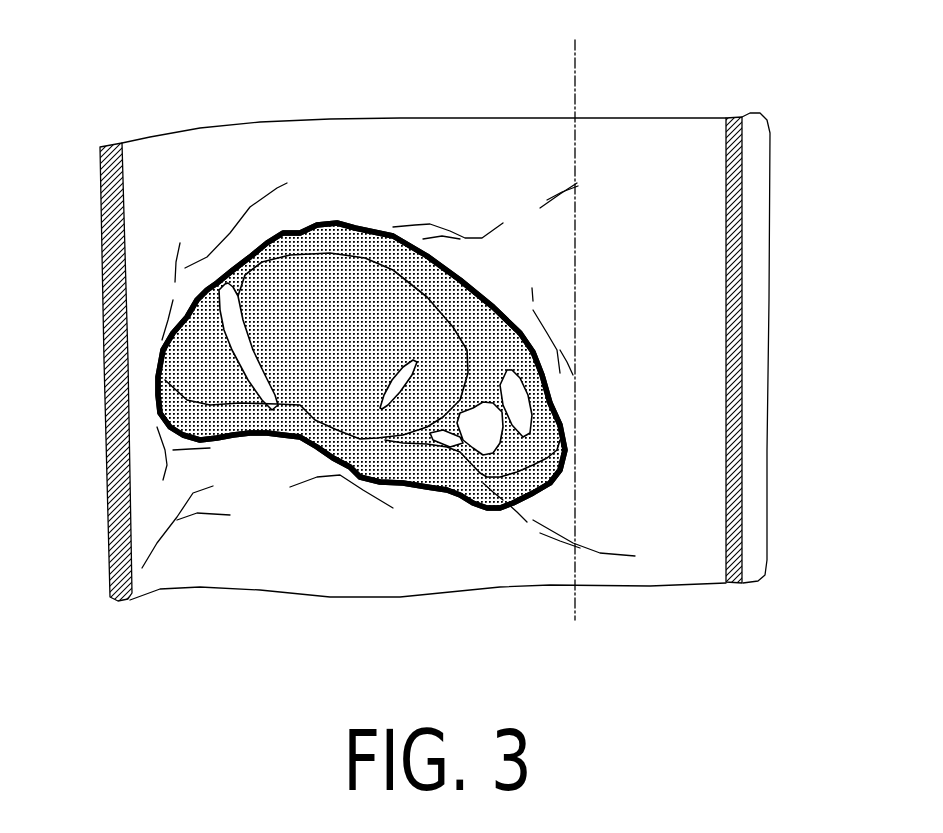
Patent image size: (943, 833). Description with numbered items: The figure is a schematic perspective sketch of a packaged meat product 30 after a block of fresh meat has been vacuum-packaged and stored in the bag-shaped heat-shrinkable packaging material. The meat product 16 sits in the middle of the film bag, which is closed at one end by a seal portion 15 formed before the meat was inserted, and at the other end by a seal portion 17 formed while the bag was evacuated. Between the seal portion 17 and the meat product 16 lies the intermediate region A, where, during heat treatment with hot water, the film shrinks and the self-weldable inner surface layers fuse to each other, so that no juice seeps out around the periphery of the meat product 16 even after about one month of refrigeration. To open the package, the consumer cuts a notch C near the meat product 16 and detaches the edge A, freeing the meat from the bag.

The packaged meat product 30 is at (251, 79).
The seal portion 15 is at (111, 337).
The meat product 16 is at (355, 228).
The seal portion 17 is at (743, 208).
The notch C is at (578, 75).
The intermediate region (edge) A is at (682, 347).